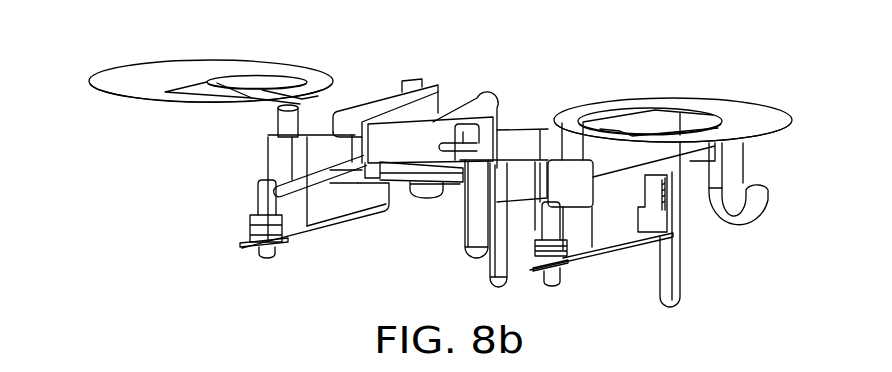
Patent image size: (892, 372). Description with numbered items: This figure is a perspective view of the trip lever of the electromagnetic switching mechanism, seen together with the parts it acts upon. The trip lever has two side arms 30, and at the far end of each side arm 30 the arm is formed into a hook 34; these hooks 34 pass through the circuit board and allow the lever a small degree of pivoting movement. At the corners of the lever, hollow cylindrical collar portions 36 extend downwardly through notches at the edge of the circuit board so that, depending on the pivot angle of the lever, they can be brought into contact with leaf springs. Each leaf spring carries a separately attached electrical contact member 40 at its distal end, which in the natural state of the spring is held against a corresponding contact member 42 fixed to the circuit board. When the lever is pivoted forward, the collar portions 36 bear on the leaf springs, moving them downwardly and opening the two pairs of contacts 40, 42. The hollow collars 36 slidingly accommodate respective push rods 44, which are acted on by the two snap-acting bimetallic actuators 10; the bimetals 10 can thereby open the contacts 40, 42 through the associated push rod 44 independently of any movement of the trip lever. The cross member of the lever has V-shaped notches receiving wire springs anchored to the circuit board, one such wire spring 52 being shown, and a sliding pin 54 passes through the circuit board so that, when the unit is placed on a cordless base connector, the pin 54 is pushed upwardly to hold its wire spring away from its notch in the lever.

The snap-acting bimetallic actuator 10 is at (170, 68).
The side arm 30 is at (418, 98).
The hook 34 is at (752, 216).
The collar portion 36 is at (293, 217).
The electrical contact member 40 is at (242, 244).
The contact member 42 is at (250, 221).
The push rod 44 is at (278, 123).
The wire spring 52 is at (343, 168).
The sliding pin 54 is at (468, 221).